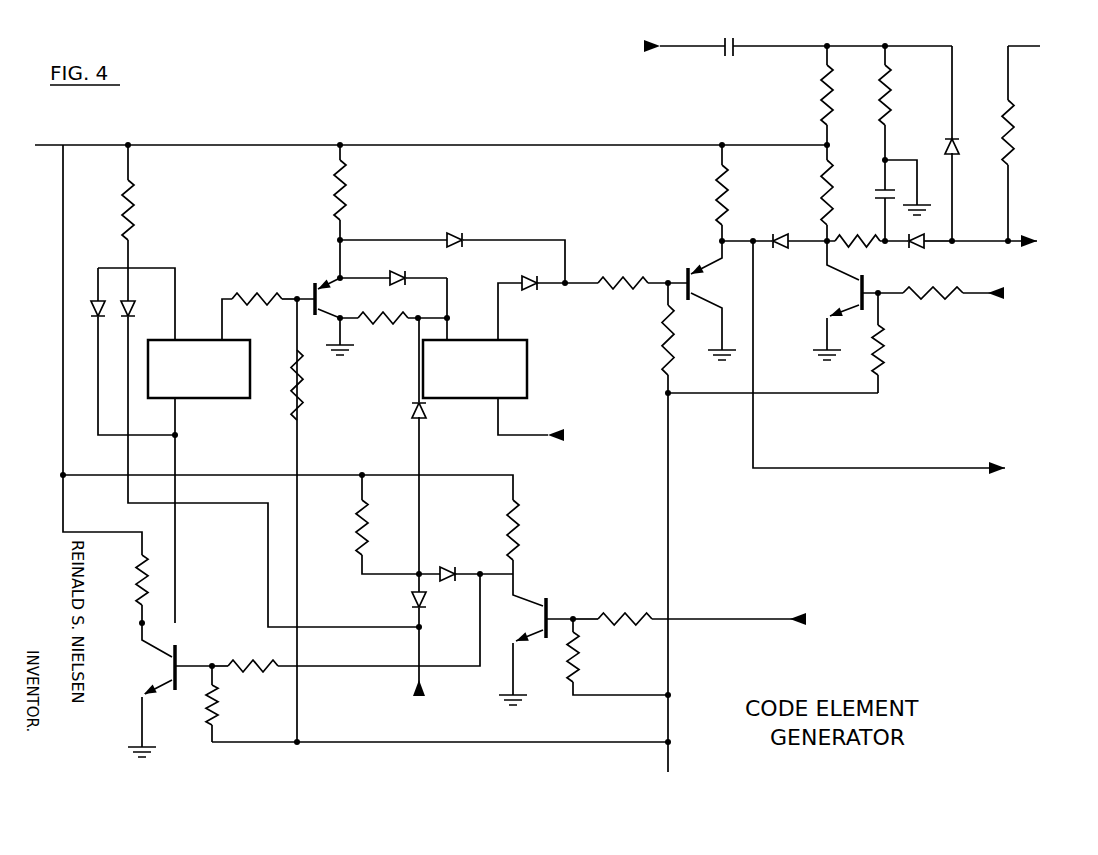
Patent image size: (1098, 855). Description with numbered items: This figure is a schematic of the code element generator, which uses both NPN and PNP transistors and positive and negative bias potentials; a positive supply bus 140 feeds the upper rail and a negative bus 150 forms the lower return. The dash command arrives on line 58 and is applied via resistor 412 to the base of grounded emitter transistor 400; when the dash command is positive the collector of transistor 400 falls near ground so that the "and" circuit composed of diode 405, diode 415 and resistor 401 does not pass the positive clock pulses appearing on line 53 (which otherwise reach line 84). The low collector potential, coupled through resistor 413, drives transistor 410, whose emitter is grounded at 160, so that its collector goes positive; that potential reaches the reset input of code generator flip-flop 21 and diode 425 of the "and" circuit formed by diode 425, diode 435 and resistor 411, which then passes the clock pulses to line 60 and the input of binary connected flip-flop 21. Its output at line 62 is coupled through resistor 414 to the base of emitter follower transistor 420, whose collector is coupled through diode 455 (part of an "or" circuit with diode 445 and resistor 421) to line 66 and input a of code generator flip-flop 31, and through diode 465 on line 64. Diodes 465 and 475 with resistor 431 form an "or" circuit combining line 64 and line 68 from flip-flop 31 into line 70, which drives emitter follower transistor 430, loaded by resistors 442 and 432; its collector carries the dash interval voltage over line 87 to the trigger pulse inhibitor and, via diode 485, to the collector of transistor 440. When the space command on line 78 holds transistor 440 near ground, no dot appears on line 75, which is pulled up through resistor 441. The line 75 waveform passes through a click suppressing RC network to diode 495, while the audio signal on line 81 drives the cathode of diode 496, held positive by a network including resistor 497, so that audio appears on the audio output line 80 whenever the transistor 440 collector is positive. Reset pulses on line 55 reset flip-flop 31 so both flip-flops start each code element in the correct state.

The positive supply bus 140 is at (48, 144).
The resistor 411 is at (136, 206).
The diode 425 is at (96, 296).
The diode 435 is at (132, 299).
The line 60 is at (178, 279).
The line 62 is at (222, 315).
The resistor 414 is at (244, 294).
The code generator flip-flop 21 is at (245, 344).
The line 53 is at (228, 503).
The dash command line 58 is at (177, 543).
The resistor 413 is at (228, 660).
The transistor 410 is at (138, 681).
The ground 160 is at (151, 727).
The line 64 is at (370, 239).
The diode 465 is at (470, 236).
The diode 455 is at (396, 276).
The emitter follower transistor 420 is at (362, 309).
The resistor 421 is at (374, 329).
The line 66 is at (450, 326).
The line 68 is at (500, 326).
The code generator flip-flop 31 is at (522, 343).
The diode 445 is at (411, 409).
The line 84 is at (421, 442).
The resistor 401 is at (356, 528).
The diode 415 is at (411, 603).
The diode 405 is at (447, 582).
The transistor 400 is at (525, 627).
The resistor 412 is at (600, 615).
The line 55 is at (505, 441).
The line 70 is at (572, 283).
The resistor 431 is at (621, 281).
The diode 475 is at (530, 292).
The line 81 is at (681, 46).
The resistor 442 is at (730, 181).
The resistor 441 is at (836, 164).
The diode 485 is at (778, 234).
The line 75 is at (838, 237).
The emitter follower transistor 430 is at (740, 295).
The transistor 440 is at (834, 305).
The resistor 432 is at (658, 343).
The line 87 is at (875, 467).
The diode 496 is at (954, 137).
The resistor 497 is at (1016, 126).
The audio output line 80 is at (1010, 238).
The diode 495 is at (917, 247).
The line 78 is at (978, 298).
The negative supply bus 150 is at (672, 736).